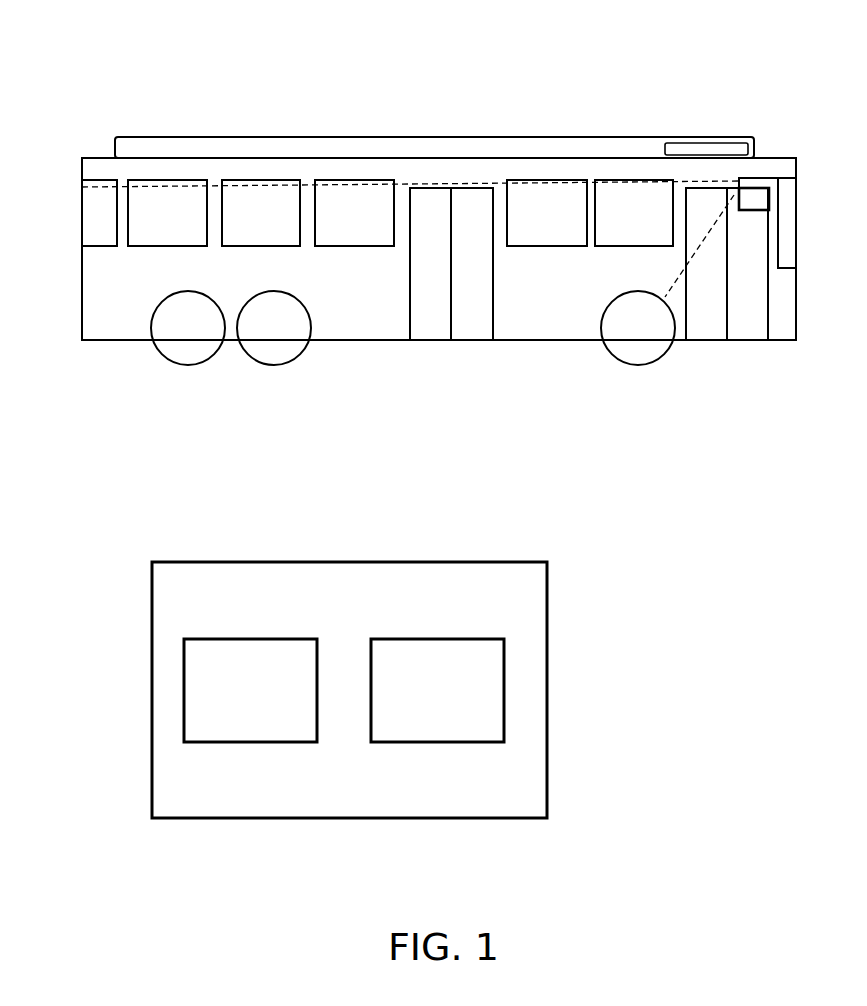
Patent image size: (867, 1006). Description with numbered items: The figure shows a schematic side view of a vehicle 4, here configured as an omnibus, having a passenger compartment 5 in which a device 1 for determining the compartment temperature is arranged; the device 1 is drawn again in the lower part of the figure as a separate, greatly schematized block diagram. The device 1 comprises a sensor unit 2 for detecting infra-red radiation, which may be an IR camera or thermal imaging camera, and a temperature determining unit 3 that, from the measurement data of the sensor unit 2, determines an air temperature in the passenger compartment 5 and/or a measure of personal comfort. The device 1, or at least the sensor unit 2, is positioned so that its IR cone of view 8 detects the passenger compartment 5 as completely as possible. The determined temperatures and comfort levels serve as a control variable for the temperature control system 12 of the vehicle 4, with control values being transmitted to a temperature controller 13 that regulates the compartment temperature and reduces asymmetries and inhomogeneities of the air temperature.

The device 1 is at (753, 177).
The sensor unit 2 is at (183, 680).
The temperature determining unit 3 is at (504, 697).
The vehicle 4 is at (702, 86).
The passenger compartment 5 is at (523, 207).
The IR cone of view 8 is at (306, 184).
The temperature control system 12 is at (98, 136).
The temperature controller 13 is at (722, 148).